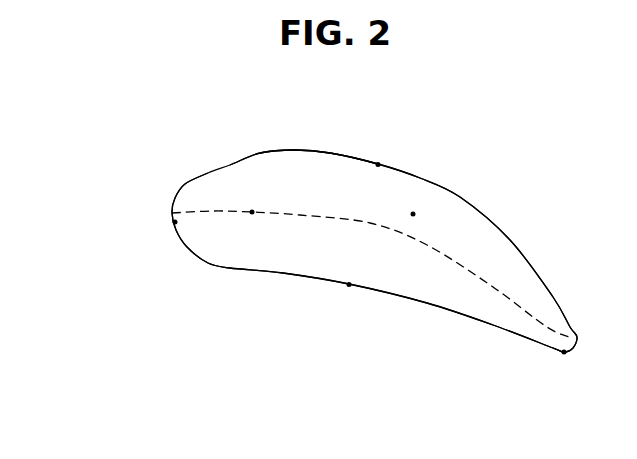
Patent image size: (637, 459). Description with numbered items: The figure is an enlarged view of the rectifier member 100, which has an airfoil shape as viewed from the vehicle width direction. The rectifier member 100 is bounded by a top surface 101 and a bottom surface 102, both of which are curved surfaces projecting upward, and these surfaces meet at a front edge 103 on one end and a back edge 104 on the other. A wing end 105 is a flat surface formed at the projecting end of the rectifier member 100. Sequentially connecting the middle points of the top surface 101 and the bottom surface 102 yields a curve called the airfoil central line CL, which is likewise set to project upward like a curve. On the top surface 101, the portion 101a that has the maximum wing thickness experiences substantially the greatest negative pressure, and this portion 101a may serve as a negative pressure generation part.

The rectifier member 100 is at (188, 160).
The top surface 101 is at (378, 164).
The portion having the maximum wing thickness 101a is at (329, 157).
The bottom surface 102 is at (349, 284).
The front edge 103 is at (175, 222).
The back edge 104 is at (564, 352).
The wing end 105 is at (413, 214).
The airfoil central line CL is at (252, 212).